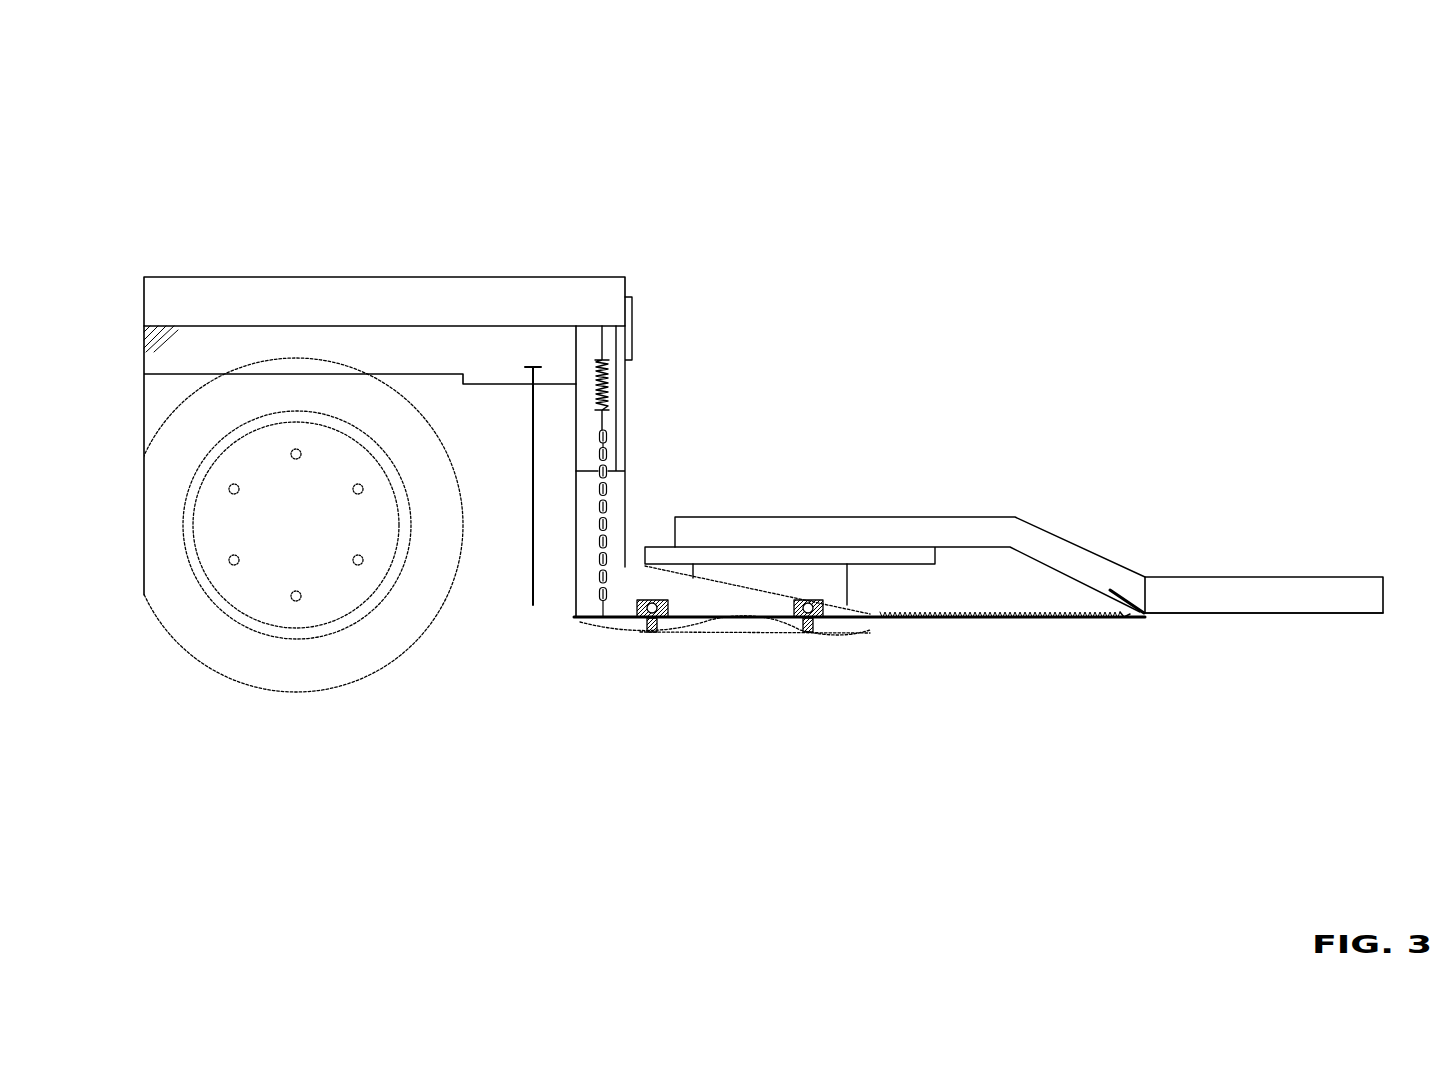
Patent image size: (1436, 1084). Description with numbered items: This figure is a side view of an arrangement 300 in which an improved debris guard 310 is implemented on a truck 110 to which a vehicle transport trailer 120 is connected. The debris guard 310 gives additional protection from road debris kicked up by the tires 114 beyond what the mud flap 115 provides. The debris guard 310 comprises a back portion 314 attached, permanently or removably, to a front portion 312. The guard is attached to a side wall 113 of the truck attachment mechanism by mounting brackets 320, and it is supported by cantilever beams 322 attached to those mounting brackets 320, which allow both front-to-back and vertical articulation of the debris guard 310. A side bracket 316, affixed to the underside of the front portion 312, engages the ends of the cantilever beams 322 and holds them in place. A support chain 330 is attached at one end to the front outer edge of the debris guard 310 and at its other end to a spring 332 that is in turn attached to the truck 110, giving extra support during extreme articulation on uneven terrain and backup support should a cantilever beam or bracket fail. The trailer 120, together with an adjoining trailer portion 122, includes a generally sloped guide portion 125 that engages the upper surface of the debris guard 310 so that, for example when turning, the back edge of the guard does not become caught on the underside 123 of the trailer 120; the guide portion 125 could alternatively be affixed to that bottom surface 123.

The cart assembly 300 is at (1330, 166).
The truck 110 is at (565, 286).
The side wall 113 is at (627, 583).
The tires 114 is at (296, 674).
The mud flap 115 is at (527, 598).
The spring 332 is at (603, 380).
The support chain 330 is at (603, 563).
The upper plate 122 is at (848, 523).
The vehicle transport trailer 120 is at (1197, 590).
The underside of the trailer 123 is at (1262, 614).
The guide portion 125 is at (1141, 616).
The front portion 312 is at (895, 621).
The back portion 314 is at (1075, 620).
The side bracket 316 is at (836, 625).
The mounting brackets 320 is at (806, 600).
The cantilever beams 322 is at (808, 622).
The debris guard 310 is at (1010, 663).